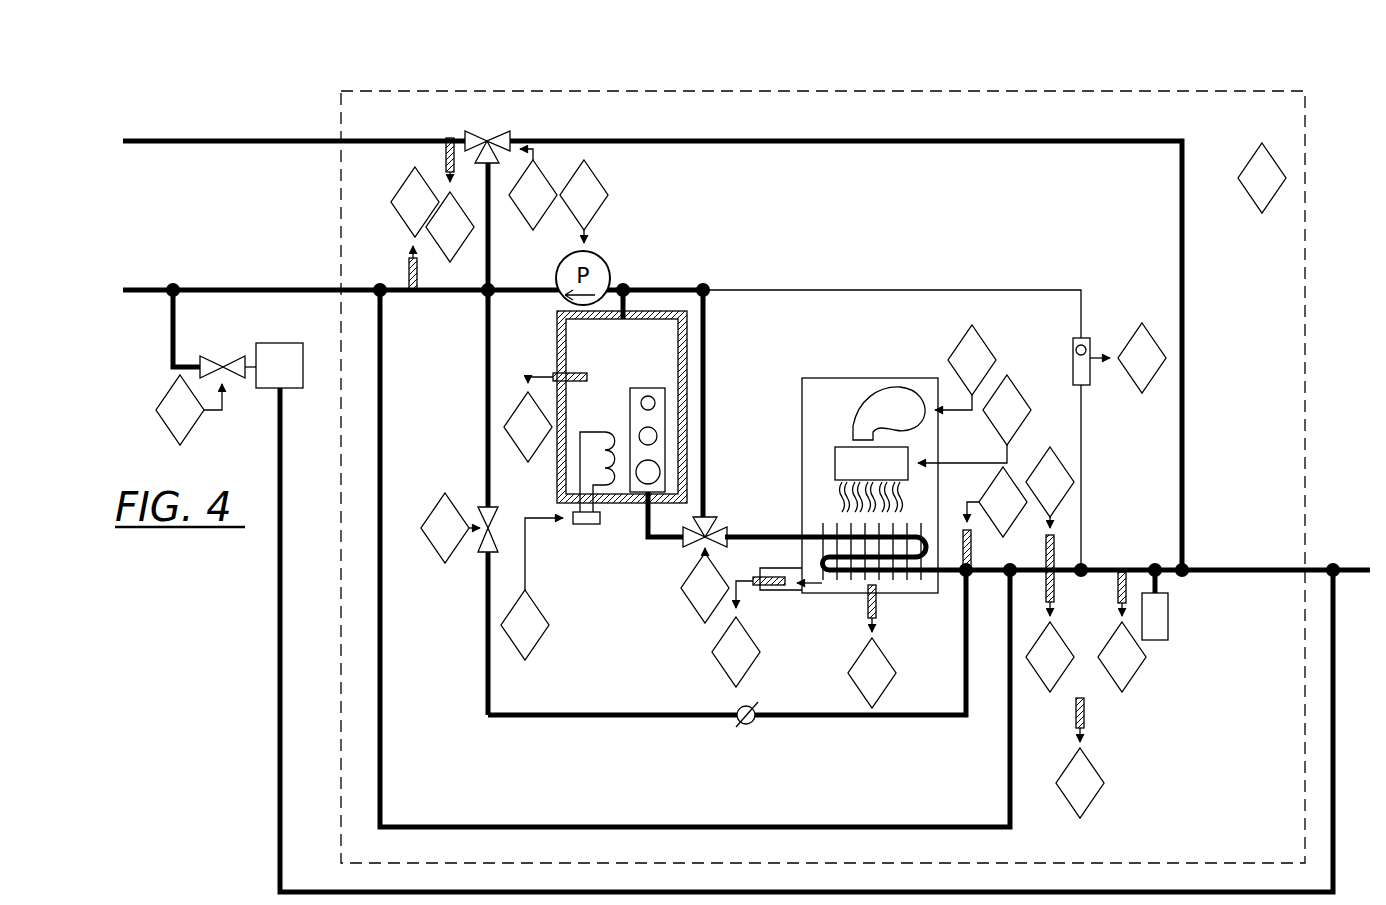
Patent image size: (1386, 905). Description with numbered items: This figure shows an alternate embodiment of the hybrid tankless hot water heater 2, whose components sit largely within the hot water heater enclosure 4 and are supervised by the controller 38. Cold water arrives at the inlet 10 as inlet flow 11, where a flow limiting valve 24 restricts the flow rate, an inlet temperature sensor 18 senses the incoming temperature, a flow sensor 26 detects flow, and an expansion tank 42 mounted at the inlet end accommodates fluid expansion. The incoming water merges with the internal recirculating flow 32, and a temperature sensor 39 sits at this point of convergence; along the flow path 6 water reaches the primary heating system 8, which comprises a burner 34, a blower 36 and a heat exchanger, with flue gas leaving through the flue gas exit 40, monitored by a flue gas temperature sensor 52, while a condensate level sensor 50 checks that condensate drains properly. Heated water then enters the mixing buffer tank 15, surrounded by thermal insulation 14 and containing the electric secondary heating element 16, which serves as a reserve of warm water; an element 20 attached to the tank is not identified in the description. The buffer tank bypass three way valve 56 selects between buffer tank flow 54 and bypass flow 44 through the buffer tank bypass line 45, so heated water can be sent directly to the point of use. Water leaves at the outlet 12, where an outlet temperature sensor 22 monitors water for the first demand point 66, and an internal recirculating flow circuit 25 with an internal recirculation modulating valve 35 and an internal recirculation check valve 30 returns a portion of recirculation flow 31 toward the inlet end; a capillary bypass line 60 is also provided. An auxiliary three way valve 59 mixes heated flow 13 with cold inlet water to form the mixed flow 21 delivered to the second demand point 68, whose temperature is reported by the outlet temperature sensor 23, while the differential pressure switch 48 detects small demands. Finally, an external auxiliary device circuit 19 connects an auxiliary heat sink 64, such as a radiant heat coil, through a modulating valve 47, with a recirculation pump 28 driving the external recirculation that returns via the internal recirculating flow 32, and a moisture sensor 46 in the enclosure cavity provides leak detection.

The hot water heater 2 is at (936, 66).
The hot water heater enclosure 4 is at (841, 91).
The flow path 6 is at (1312, 568).
The primary heating system 8 is at (801, 456).
The inlet of water heater 10 is at (1301, 575).
The inlet flow 11 is at (748, 130).
The outlet flow 12 is at (341, 290).
The heated flow 13 is at (358, 268).
The thermal insulation for mixing buffer tank 14 is at (555, 320).
The mixing buffer tank 15 is at (622, 401).
The secondary heating element 16 is at (550, 586).
The inlet temperature sensor 18 is at (1122, 632).
The external auxiliary device circuit 19 is at (158, 327).
The tank sensor 20 is at (545, 417).
The mixed flow 21 is at (382, 130).
The outlet temperature sensor 22 is at (415, 228).
The outlet temperature sensor for auxiliary demand 23 is at (450, 227).
The flow limiting valve 24 is at (1050, 524).
The internal recirculating flow circuit 25 is at (487, 680).
The flow sensor 26 is at (1050, 647).
The recirculation pump 28 is at (584, 201).
The internal recirculation check valve 30 is at (742, 725).
The portion of recirculation flow 31 is at (469, 300).
The internal recirculating flow 32 is at (471, 595).
The burner 34 is at (974, 419).
The internal recirculation modulating valve 35 is at (459, 528).
The blower 36 is at (965, 367).
The controller 38 is at (1252, 163).
The temperature sensor 39 is at (995, 518).
The flue gas exit 40 is at (820, 590).
The expansion tank 42 is at (1168, 628).
The bypass flow 44 is at (720, 366).
The buffer tank bypass line 45 is at (706, 305).
The moisture sensor 46 is at (1080, 758).
The external auxiliary device modulating valve 47 is at (189, 410).
The differential pressure switch 48 is at (934, 430).
The condensate level sensor 50 is at (872, 646).
The flue gas temperature sensor 52 is at (736, 634).
The buffer tank flow 54 is at (692, 553).
The buffer tank bypass three way valve 56 is at (705, 585).
The auxiliary three way valve 59 is at (511, 180).
The capillary bypass line 60 is at (490, 827).
The auxiliary heat sink 64 is at (279, 365).
The first demand point 66 is at (147, 289).
The second demand point 68 is at (142, 140).